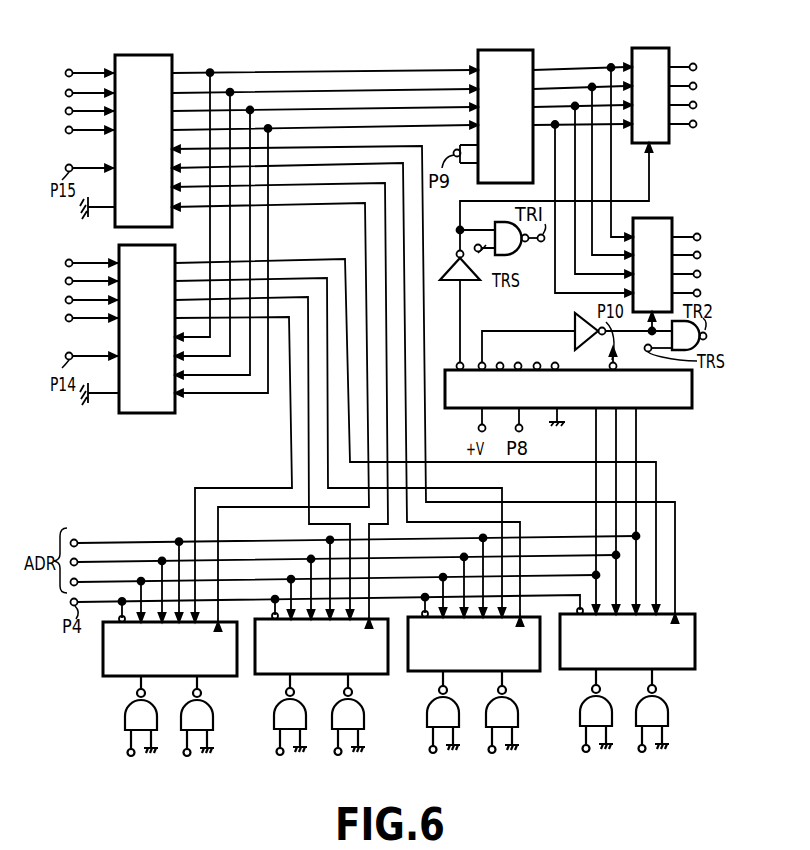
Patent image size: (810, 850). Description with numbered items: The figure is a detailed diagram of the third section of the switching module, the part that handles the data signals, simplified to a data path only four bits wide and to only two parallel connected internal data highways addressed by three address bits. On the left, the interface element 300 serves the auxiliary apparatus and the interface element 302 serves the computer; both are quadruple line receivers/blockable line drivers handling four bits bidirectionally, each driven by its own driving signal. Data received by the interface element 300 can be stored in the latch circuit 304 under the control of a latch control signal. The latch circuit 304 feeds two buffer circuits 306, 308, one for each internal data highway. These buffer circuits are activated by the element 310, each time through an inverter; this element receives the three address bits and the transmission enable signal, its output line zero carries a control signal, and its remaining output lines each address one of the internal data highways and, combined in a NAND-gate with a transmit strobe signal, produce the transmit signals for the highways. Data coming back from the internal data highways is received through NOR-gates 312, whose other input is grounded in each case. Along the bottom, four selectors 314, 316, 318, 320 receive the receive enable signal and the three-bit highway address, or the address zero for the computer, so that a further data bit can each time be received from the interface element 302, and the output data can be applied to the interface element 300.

The interface element for the auxiliary apparatus 300 is at (141, 55).
The interface element for the computer 302 is at (130, 332).
The latch circuit 304 is at (503, 58).
The buffer circuit 306 is at (647, 50).
The buffer circuit 308 is at (652, 223).
The decoder element 310 is at (652, 398).
The NOR-gate 312 is at (670, 701).
The selector 314 is at (108, 658).
The selector 316 is at (269, 662).
The selector 318 is at (428, 660).
The selector 320 is at (581, 670).